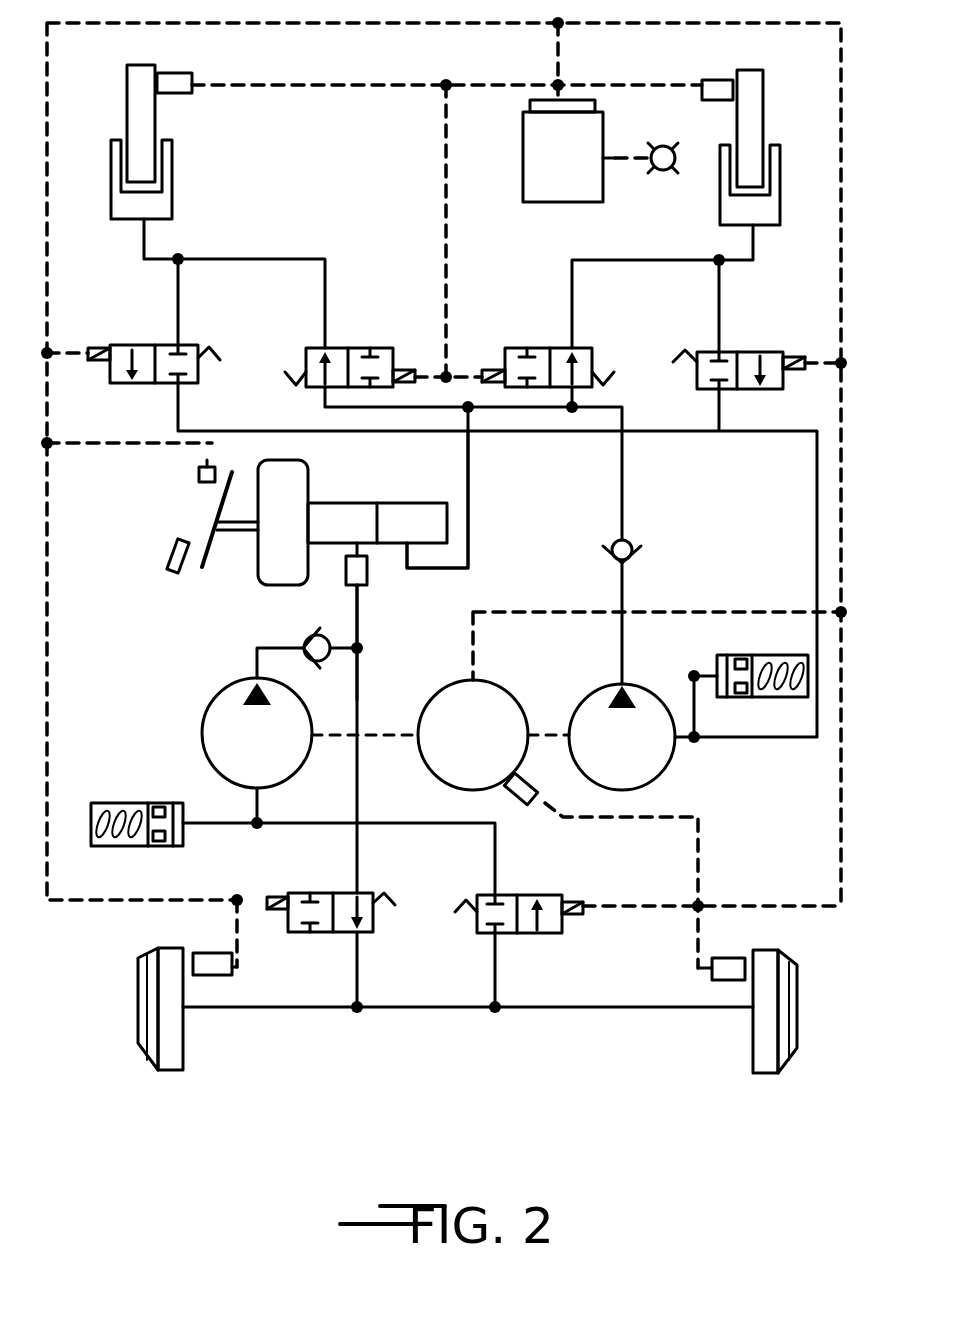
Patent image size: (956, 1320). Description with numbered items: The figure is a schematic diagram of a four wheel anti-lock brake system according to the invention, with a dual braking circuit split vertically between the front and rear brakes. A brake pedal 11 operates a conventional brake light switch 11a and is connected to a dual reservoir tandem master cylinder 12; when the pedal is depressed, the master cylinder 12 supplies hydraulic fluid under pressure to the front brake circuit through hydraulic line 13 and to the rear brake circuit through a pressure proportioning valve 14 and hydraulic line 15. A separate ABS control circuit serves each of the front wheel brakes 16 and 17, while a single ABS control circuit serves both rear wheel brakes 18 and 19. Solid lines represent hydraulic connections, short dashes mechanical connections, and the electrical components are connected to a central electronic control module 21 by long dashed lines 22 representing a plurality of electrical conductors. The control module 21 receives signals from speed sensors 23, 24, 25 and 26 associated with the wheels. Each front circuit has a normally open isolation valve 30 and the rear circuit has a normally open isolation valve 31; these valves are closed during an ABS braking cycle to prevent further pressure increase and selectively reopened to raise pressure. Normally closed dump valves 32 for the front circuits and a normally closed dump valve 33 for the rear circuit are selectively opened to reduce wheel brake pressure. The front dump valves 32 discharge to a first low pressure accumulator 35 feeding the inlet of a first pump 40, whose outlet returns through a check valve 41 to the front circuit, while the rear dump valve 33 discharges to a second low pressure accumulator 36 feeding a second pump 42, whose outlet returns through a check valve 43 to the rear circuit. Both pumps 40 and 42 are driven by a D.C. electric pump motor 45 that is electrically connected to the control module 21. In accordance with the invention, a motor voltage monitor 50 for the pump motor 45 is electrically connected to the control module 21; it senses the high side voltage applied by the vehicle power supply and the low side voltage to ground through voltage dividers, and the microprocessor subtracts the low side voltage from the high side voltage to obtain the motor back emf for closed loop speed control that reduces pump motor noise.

The brake pedal 11 is at (170, 553).
The brake light switch 11a is at (198, 477).
The dual reservoir tandem master cylinder 12 is at (355, 503).
The hydraulic line 13 is at (470, 497).
The pressure proportioning valve 14 is at (368, 570).
The hydraulic line 15 is at (360, 620).
The front wheel brake 16 is at (106, 146).
The front wheel brake 17 is at (790, 163).
The rear wheel brake 18 is at (122, 1027).
The rear wheel brake 19 is at (814, 1020).
The electronic control module 21 is at (577, 170).
The long dashed lines 22 is at (48, 320).
The speed sensor 23 is at (181, 73).
The speed sensor 24 is at (719, 79).
The speed sensor 25 is at (218, 976).
The speed sensor 26 is at (725, 982).
The normally open isolation valve 30 is at (331, 348).
The normally open isolation valve 31 is at (306, 893).
The normally closed dump valve 32 is at (188, 344).
The normally closed dump valve 33 is at (517, 895).
The first low pressure accumulator 35 is at (758, 656).
The second low pressure accumulator 36 is at (112, 803).
The first pump 40 is at (648, 785).
The check valve 41 is at (636, 546).
The second pump 42 is at (200, 712).
The check valve 43 is at (305, 636).
The pump motor 45 is at (500, 684).
The motor voltage monitor 50 is at (508, 798).